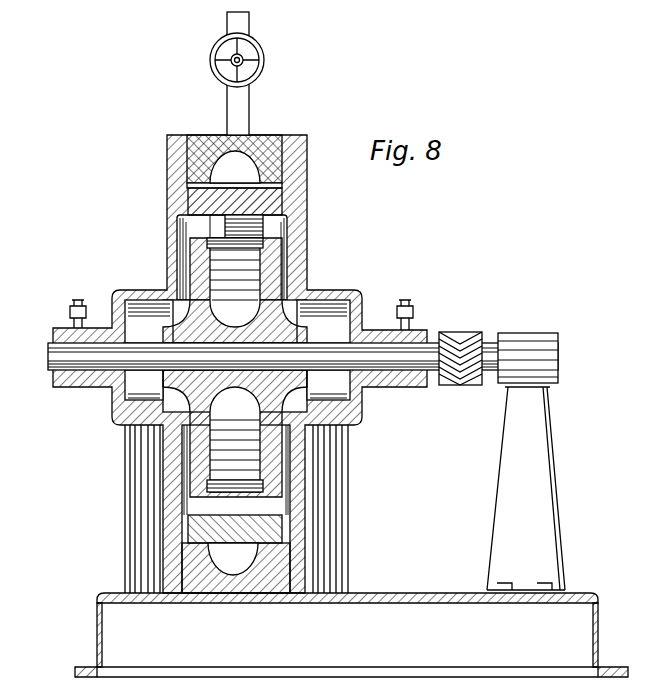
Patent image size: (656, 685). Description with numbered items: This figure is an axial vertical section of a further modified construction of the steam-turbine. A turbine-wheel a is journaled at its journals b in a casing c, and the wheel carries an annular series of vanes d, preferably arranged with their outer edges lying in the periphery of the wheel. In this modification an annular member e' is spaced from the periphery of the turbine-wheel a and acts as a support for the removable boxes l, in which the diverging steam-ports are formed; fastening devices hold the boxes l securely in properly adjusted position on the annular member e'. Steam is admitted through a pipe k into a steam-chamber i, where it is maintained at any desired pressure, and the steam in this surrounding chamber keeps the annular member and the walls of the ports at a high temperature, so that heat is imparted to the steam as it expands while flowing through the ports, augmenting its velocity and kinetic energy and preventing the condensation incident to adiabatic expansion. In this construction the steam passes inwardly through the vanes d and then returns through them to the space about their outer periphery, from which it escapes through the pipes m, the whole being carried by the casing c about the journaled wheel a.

The turbine-wheel a is at (270, 268).
The journal b is at (60, 352).
The casing c is at (297, 172).
The vanes d is at (207, 247).
The annular member e' is at (196, 204).
The steam-chamber i is at (240, 163).
The pipe k is at (243, 97).
The boxes l is at (263, 225).
The pipes m is at (133, 487).